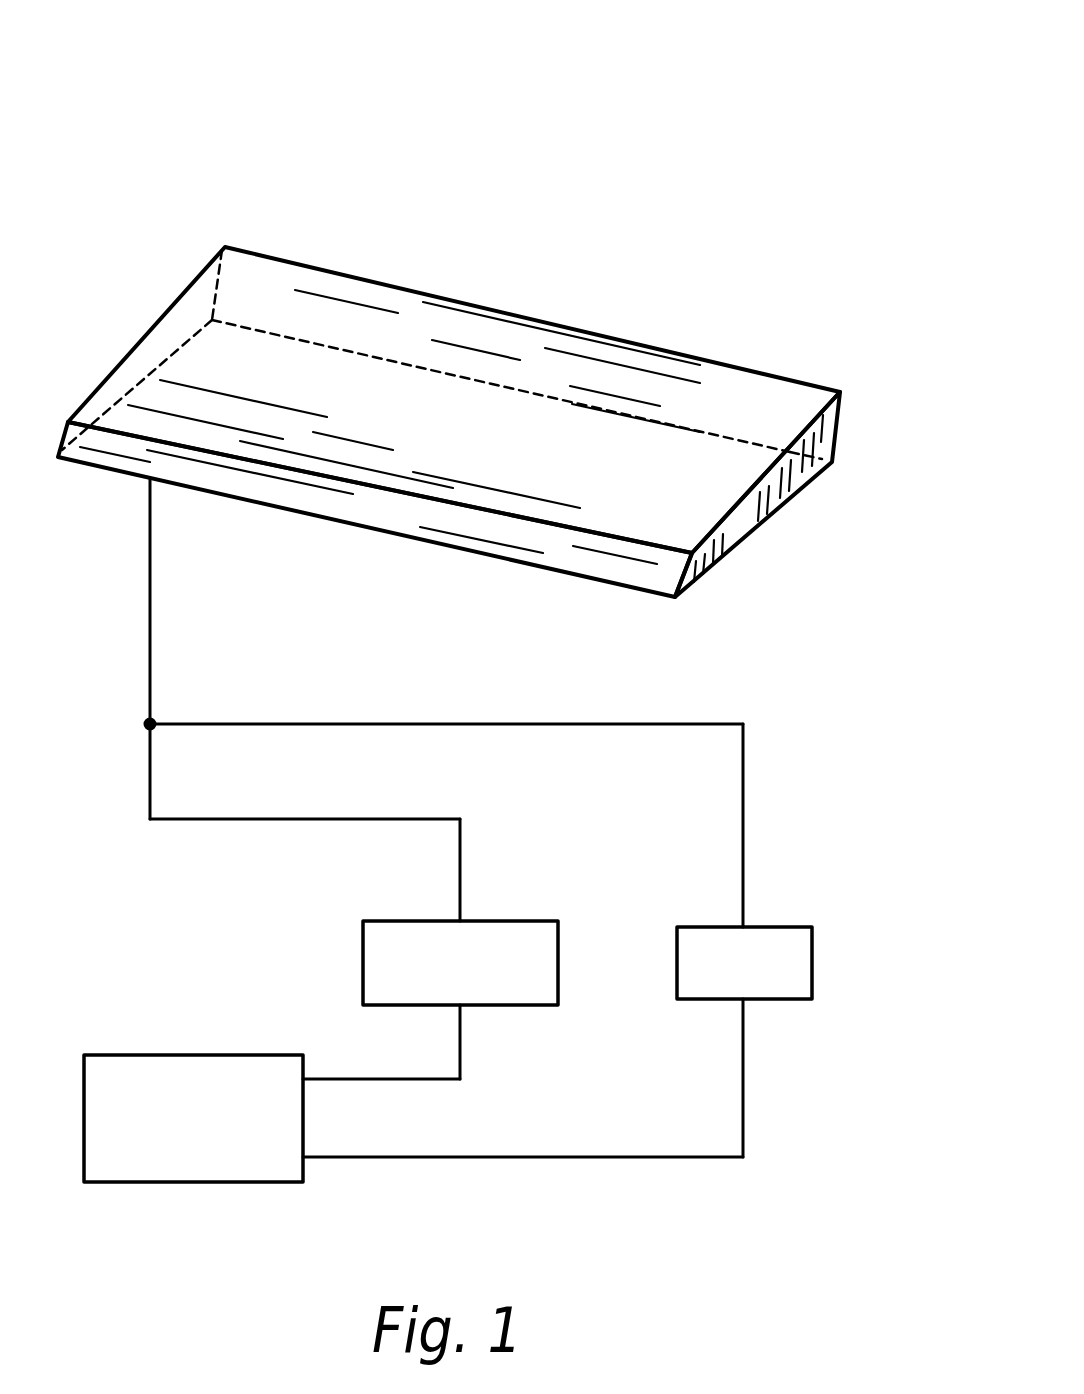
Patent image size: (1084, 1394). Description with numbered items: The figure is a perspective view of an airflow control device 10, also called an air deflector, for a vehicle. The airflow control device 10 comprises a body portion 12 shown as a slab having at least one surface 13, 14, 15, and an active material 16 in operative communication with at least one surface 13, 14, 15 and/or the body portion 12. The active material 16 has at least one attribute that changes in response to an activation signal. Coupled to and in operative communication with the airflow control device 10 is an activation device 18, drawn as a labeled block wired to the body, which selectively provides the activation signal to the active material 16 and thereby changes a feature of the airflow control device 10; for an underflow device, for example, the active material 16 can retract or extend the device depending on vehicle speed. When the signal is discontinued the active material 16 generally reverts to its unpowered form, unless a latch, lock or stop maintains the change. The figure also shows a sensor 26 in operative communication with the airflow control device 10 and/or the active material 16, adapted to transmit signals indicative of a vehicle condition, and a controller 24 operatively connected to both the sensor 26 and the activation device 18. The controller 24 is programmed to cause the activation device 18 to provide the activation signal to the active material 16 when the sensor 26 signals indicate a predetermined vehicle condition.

The airflow control device 10 is at (618, 154).
The body portion 12 is at (838, 436).
The surface 13 is at (315, 375).
The surface 14 is at (742, 520).
The surface 15 is at (382, 517).
The active material 16 is at (583, 370).
The activation device 18 is at (505, 918).
The controller 24 is at (165, 1054).
The sensor 26 is at (813, 947).